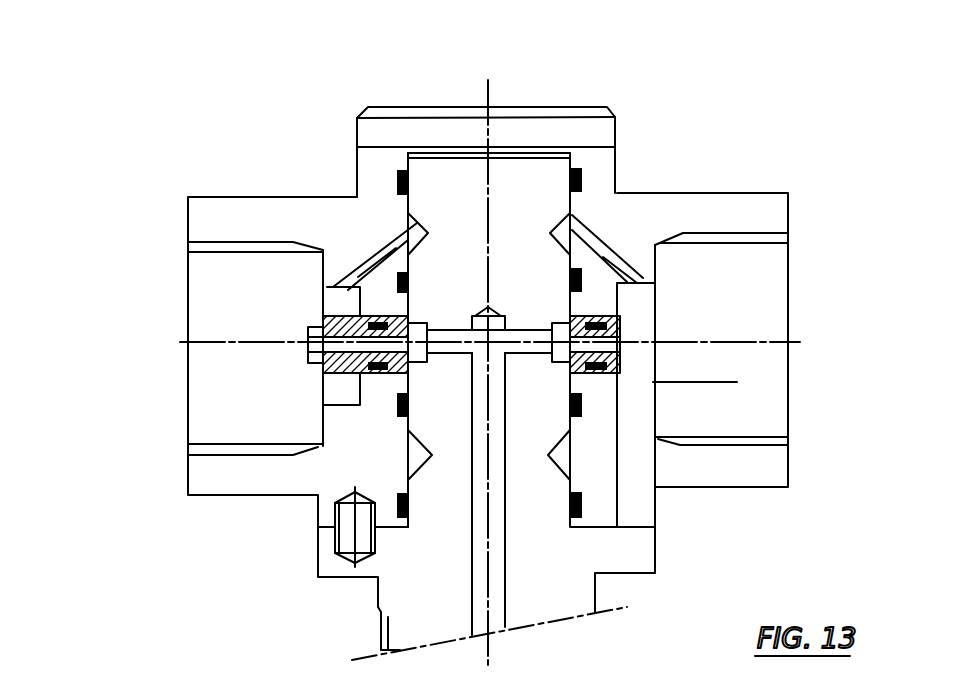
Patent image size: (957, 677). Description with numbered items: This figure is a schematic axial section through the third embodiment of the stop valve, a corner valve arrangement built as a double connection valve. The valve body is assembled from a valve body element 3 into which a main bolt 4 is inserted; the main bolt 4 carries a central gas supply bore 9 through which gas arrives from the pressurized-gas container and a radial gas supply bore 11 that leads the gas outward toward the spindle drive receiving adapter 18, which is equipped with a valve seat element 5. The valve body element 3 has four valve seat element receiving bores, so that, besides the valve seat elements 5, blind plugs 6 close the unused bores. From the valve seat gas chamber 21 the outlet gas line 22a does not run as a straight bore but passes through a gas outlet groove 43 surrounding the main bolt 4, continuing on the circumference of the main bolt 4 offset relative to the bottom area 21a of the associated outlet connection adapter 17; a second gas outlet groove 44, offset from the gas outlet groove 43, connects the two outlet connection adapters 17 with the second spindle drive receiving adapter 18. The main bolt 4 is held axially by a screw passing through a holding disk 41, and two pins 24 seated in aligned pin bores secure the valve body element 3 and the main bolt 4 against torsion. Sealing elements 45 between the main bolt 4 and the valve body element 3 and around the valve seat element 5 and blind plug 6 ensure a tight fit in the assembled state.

The valve body element 3 is at (625, 484).
The main bolt 4 is at (455, 421).
The valve seat element 5 is at (307, 327).
The blind plug 6 is at (620, 332).
The central gas supply bore 9 is at (497, 558).
The radial gas supply bore 11 is at (449, 330).
The outlet connection adapter 17 is at (750, 402).
The spindle drive receiving adapter 18 is at (235, 397).
The valve seat gas chamber 21 is at (337, 393).
The bottom area 21a is at (737, 382).
The outlet gas line 22a is at (378, 250).
The pin 24 is at (347, 537).
The holding disk 41 is at (553, 133).
The gas outlet groove 43 is at (562, 225).
The second gas outlet groove 44 is at (403, 455).
The sealing elements 45 is at (397, 180).